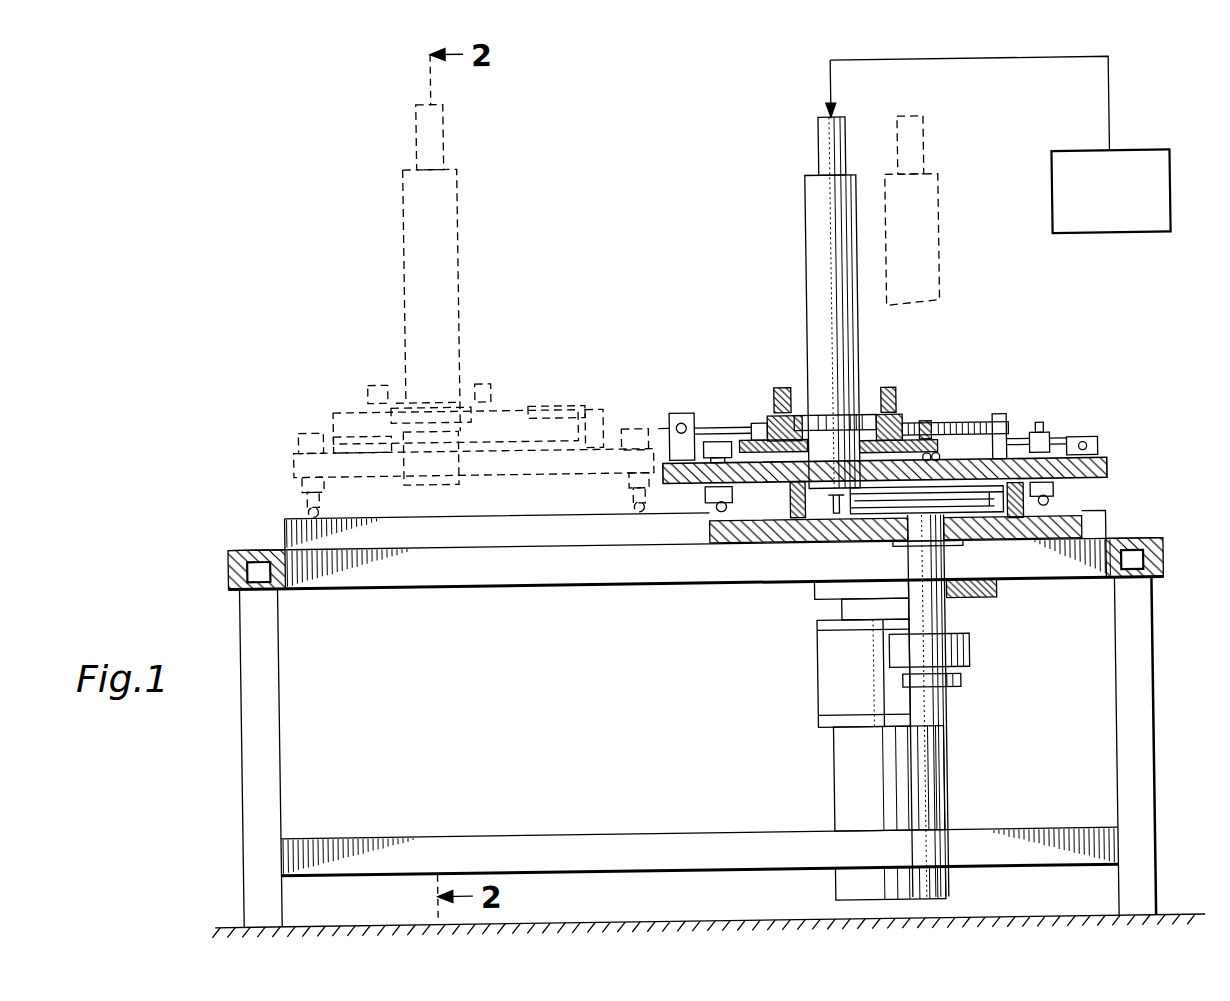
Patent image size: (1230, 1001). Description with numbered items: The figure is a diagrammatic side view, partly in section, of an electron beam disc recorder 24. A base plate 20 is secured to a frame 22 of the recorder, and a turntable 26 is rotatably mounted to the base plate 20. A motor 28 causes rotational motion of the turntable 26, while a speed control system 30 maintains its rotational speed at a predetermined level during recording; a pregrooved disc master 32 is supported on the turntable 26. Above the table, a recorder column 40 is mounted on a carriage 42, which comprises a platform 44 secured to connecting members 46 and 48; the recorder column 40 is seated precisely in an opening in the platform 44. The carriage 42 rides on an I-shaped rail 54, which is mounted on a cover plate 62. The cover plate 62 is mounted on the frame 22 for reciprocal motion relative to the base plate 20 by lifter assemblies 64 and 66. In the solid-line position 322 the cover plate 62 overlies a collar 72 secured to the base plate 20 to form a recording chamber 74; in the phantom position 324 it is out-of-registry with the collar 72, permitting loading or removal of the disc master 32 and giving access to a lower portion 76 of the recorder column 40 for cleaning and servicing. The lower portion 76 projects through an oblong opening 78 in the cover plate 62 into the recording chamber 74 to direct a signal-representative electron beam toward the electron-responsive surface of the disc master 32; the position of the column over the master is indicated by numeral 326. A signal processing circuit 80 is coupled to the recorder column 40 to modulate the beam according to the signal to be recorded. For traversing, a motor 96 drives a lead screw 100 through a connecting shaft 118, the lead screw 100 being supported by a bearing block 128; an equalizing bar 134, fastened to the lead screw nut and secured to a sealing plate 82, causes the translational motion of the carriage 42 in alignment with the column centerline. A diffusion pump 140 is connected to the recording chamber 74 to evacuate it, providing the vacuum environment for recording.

The base plate 20 is at (1084, 530).
The frame 22 is at (1040, 583).
The electron beam disc recorder 24 is at (1197, 312).
The turntable 26 is at (960, 490).
The motor 28 is at (968, 660).
The speed control system 30 is at (959, 683).
The pregrooved disc master 32 is at (840, 515).
The recorder column 40 is at (810, 263).
The carriage 42 is at (948, 347).
The platform 44 is at (774, 417).
The connecting member 46 is at (784, 389).
The connecting member 48 is at (890, 390).
The I-shaped rail 54 is at (1000, 418).
The cover plate 62 is at (1110, 473).
The lifter assembly 64 is at (706, 496).
The lifter assembly 66 is at (1054, 497).
The collar 72 is at (791, 500).
The recording chamber 74 is at (1014, 522).
The lower portion of the recorder column 76 is at (828, 490).
The oblong opening 78 is at (899, 463).
The signal processing circuit 80 is at (1175, 200).
The sealing plate 82 is at (744, 440).
The motor 96 is at (660, 428).
The lead screw 100 is at (960, 426).
The connecting shaft 118 is at (672, 413).
The bearing block 128 is at (1026, 430).
The equalizing bar 134 is at (927, 424).
The diffusion pump 140 is at (816, 691).
The position overlying the collar 322 is at (1100, 455).
The out-of-registry position 324 is at (295, 460).
The position of the recorder column over the disc master 326 is at (938, 269).